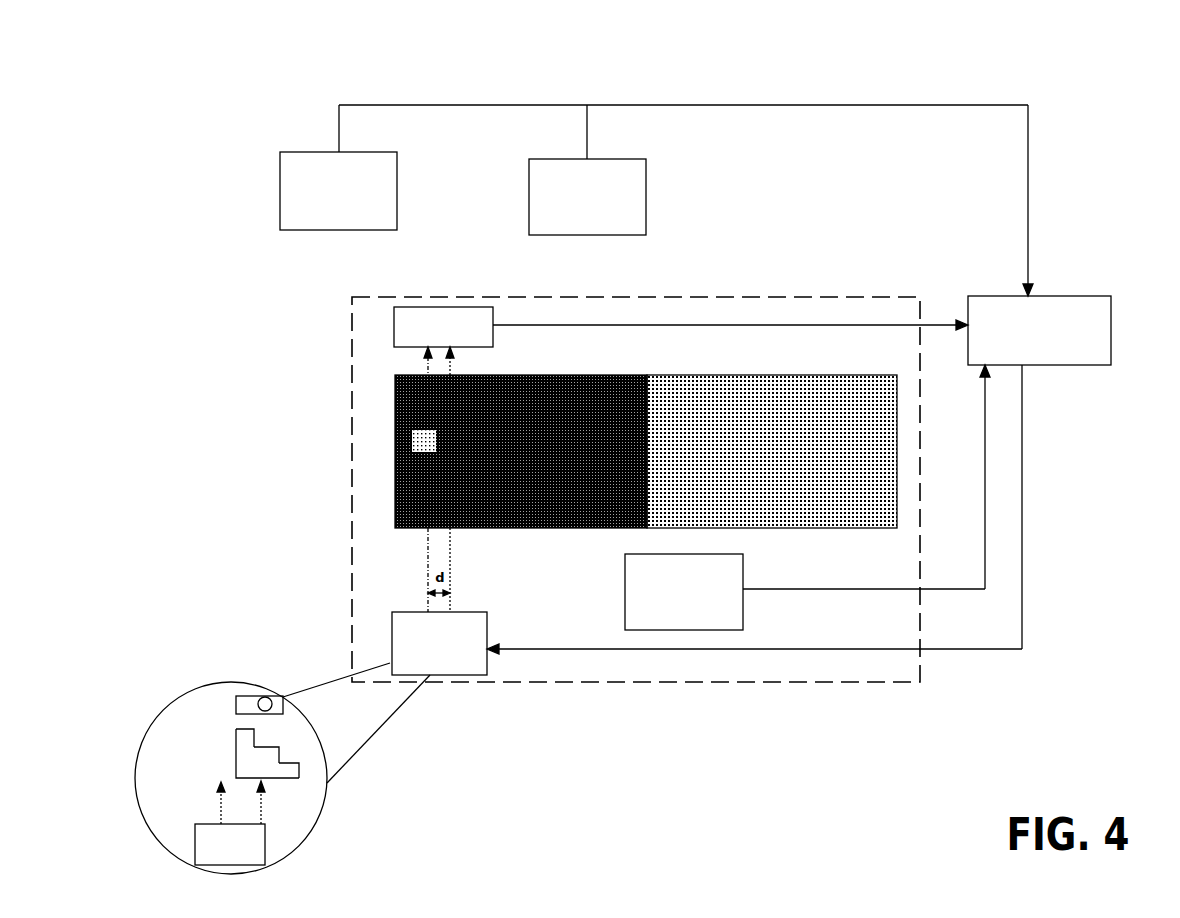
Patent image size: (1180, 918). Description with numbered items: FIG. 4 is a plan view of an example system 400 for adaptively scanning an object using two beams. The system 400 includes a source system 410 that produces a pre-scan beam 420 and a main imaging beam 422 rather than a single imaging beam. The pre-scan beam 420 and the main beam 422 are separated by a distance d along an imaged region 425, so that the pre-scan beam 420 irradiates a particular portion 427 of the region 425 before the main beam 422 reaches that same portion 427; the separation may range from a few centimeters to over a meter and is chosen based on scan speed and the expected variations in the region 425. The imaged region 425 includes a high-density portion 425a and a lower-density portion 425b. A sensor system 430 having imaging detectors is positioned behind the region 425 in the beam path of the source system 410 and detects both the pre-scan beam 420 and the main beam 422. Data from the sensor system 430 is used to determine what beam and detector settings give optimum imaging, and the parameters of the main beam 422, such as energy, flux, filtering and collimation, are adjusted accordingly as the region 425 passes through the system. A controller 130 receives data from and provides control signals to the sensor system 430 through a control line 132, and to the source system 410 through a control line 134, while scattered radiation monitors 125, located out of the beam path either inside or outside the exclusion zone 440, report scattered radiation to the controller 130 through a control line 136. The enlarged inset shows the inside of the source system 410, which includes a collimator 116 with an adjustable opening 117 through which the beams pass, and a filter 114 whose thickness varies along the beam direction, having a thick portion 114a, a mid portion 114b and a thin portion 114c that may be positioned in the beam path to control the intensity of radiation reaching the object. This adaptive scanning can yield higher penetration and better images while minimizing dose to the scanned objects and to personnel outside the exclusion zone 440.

The system 400 is at (661, 40).
The scattered radiation monitor 125 is at (397, 162).
The control line 136 is at (1030, 140).
The controller 130 is at (1075, 296).
The control line 132 is at (793, 325).
The control line 134 is at (830, 649).
The sensor system 430 is at (440, 307).
The exclusion zone 440 is at (598, 297).
The imaged region 425 is at (667, 345).
The high-density portion 425a is at (400, 468).
The lower-density portion 425b is at (685, 430).
The portion 427 is at (410, 440).
The pre-scan beam 420 is at (428, 556).
The main beam 422 is at (452, 553).
The source system 410 is at (487, 632).
The collimator 116 is at (240, 696).
The adjustable opening 117 is at (283, 696).
The filter 114 is at (236, 742).
The thick portion 114a is at (236, 737).
The mid portion 114b is at (265, 753).
The thin portion 114c is at (289, 765).